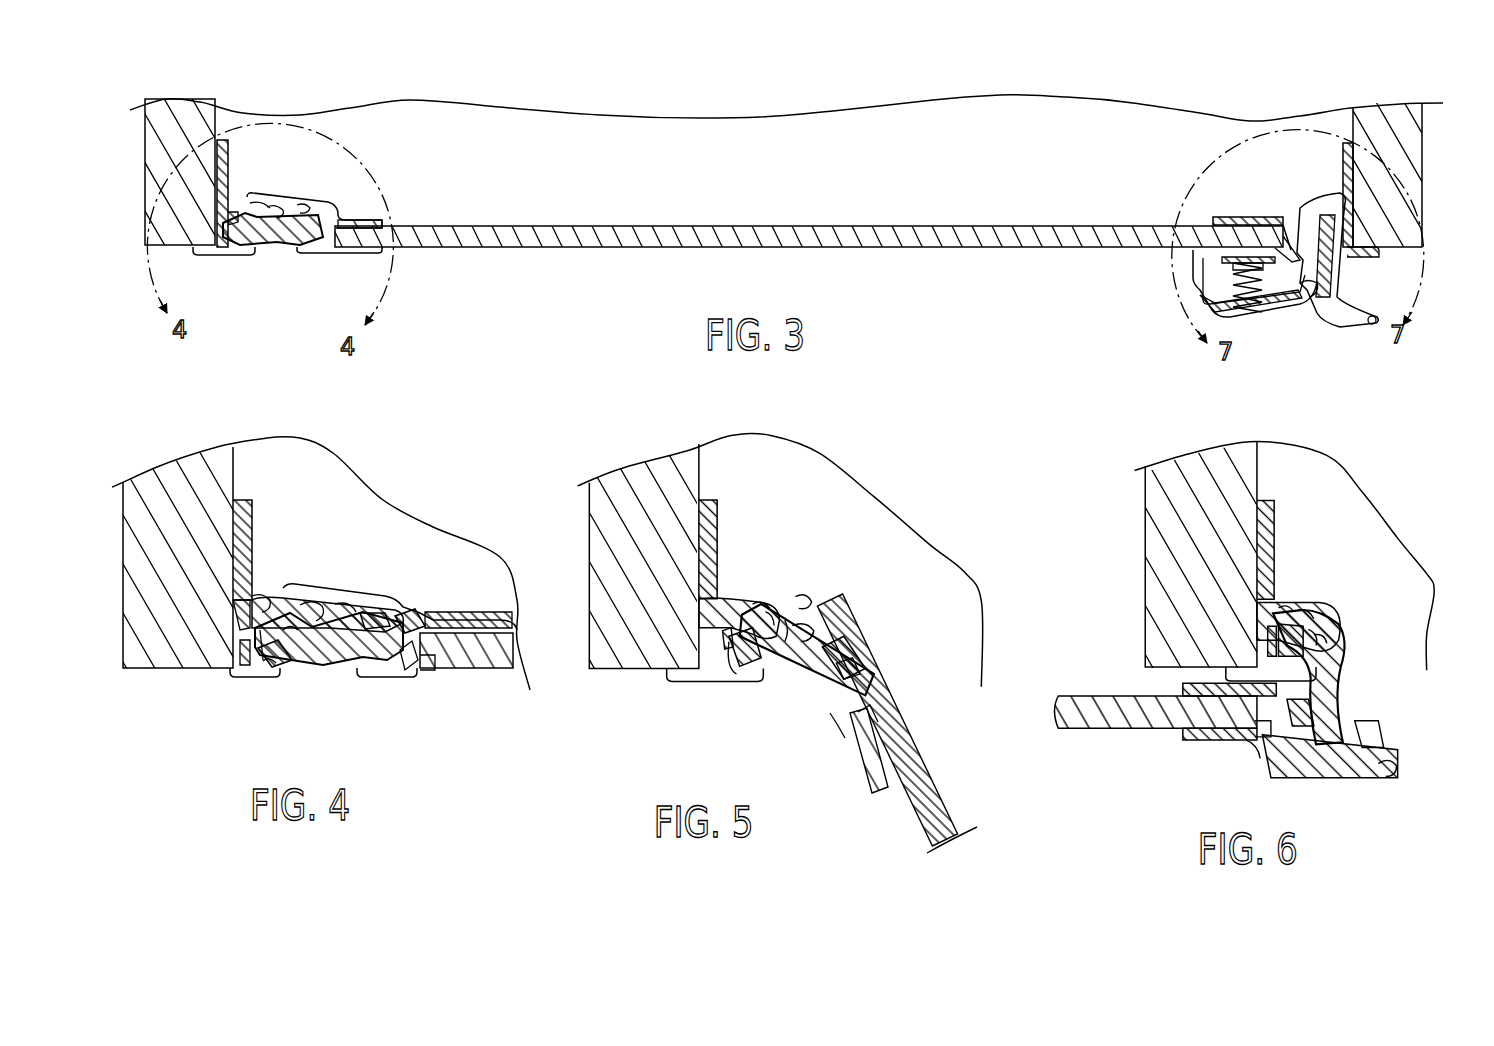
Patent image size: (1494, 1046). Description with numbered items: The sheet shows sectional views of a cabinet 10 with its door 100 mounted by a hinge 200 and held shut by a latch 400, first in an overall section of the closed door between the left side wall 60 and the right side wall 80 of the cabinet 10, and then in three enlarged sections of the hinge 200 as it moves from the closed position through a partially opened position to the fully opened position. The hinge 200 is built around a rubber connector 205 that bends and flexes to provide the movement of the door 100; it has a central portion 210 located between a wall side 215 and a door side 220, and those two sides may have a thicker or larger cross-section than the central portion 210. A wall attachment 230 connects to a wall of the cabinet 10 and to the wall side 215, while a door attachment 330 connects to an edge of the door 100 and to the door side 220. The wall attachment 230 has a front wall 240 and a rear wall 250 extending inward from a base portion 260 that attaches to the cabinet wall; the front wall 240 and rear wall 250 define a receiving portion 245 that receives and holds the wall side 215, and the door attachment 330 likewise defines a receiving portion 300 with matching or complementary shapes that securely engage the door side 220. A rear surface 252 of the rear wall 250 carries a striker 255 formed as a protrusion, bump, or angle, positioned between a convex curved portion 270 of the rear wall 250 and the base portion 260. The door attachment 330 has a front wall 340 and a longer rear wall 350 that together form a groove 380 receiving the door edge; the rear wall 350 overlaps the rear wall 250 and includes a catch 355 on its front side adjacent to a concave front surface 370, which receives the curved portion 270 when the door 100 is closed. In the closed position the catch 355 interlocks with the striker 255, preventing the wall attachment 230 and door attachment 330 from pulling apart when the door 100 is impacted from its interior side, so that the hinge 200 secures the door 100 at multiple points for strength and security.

In FIG. 3, the cabinet 10 is at (1350, 85).
In FIG. 3, the left side wall 60 is at (150, 156).
In FIG. 3, the right side wall 80 is at (1412, 155).
In FIG. 3, the door 100 is at (830, 240).
In FIG. 3, the hinge 200 is at (268, 258).
In FIG. 3, the latch 400 is at (1315, 325).
In FIG. 4, the rubber connector 205 is at (328, 665).
In FIG. 5, the rubber connector 205 is at (757, 643).
In FIG. 6, the rubber connector 205 is at (1303, 667).
In FIG. 4, the central portion 210 is at (330, 660).
In FIG. 5, the central portion 210 is at (733, 645).
In FIG. 6, the central portion 210 is at (1307, 653).
In FIG. 4, the wall side 215 is at (260, 660).
In FIG. 5, the wall side 215 is at (727, 633).
In FIG. 6, the wall side 215 is at (1297, 620).
In FIG. 4, the door side 220 is at (365, 600).
In FIG. 5, the door side 220 is at (823, 647).
In FIG. 6, the door side 220 is at (1287, 700).
In FIG. 4, the wall attachment 230 is at (240, 655).
In FIG. 5, the wall attachment 230 is at (685, 657).
In FIG. 6, the wall attachment 230 is at (1253, 598).
In FIG. 4, the front wall 240 is at (265, 668).
In FIG. 4, the receiving portion 245 is at (247, 657).
In FIG. 5, the receiving portion 245 is at (723, 627).
In FIG. 6, the receiving portion 245 is at (1257, 620).
In FIG. 4, the rear wall 250 is at (283, 597).
In FIG. 5, the rear wall 250 is at (743, 593).
In FIG. 6, the rear wall 250 is at (1280, 587).
In FIG. 4, the rear surface 252 is at (265, 600).
In FIG. 5, the rear surface 252 is at (730, 590).
In FIG. 6, the rear surface 252 is at (1270, 593).
In FIG. 4, the striker 255 is at (315, 597).
In FIG. 5, the striker 255 is at (762, 593).
In FIG. 6, the striker 255 is at (1287, 593).
In FIG. 4, the base portion 260 is at (255, 503).
In FIG. 5, the base portion 260 is at (703, 510).
In FIG. 6, the base portion 260 is at (1252, 515).
In FIG. 4, the curved portion 270 is at (343, 597).
In FIG. 5, the curved portion 270 is at (770, 600).
In FIG. 6, the curved portion 270 is at (1300, 620).
In FIG. 4, the receiving portion 300 is at (400, 615).
In FIG. 5, the receiving portion 300 is at (810, 640).
In FIG. 6, the receiving portion 300 is at (1272, 733).
In FIG. 4, the door attachment 330 is at (412, 658).
In FIG. 5, the door attachment 330 is at (830, 713).
In FIG. 6, the door attachment 330 is at (1237, 720).
In FIG. 4, the front wall 340 is at (450, 670).
In FIG. 5, the front wall 340 is at (860, 793).
In FIG. 6, the front wall 340 is at (1183, 668).
In FIG. 4, the rear wall 350 is at (433, 600).
In FIG. 5, the rear wall 350 is at (903, 747).
In FIG. 6, the rear wall 350 is at (1220, 710).
In FIG. 4, the catch 355 is at (292, 630).
In FIG. 5, the catch 355 is at (780, 590).
In FIG. 6, the catch 355 is at (1363, 750).
In FIG. 5, the concave front surface 370 is at (793, 612).
In FIG. 6, the concave front surface 370 is at (1343, 730).
In FIG. 4, the groove 380 is at (433, 670).
In FIG. 5, the groove 380 is at (865, 730).
In FIG. 6, the groove 380 is at (1248, 720).